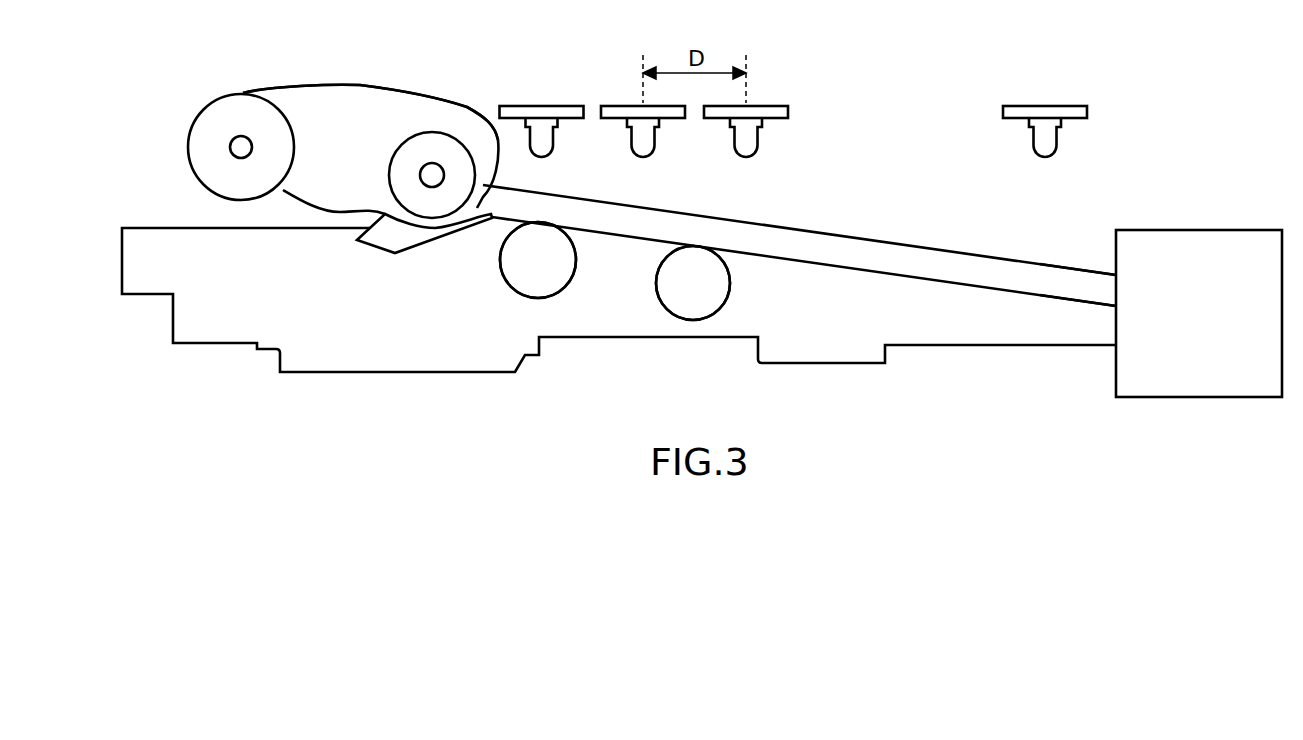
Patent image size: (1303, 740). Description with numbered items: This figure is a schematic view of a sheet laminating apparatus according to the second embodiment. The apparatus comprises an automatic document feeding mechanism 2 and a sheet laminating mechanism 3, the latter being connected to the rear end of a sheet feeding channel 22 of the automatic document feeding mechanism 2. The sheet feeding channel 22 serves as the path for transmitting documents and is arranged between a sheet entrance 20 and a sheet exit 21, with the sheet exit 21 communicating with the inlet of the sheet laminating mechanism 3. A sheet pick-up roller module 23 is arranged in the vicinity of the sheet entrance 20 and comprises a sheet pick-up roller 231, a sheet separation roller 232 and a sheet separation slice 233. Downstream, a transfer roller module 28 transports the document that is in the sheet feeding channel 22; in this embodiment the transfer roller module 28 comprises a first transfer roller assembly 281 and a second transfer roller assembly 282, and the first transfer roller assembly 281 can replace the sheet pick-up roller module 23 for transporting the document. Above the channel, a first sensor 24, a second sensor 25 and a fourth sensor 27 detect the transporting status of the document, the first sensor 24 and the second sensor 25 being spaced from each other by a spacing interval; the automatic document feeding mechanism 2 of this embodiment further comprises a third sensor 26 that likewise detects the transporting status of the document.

The automatic document feeding mechanism 2 is at (343, 382).
The sheet laminating mechanism 3 is at (1205, 243).
The sheet entrance 20 is at (198, 210).
The sheet exit 21 is at (1110, 290).
The sheet feeding channel 22 is at (850, 253).
The sheet pick-up roller module 23 is at (340, 76).
The first sensor 24 is at (748, 138).
The second sensor 25 is at (645, 138).
The third sensor 26 is at (543, 137).
The fourth sensor 27 is at (1047, 138).
The transfer roller module 28 is at (643, 308).
The sheet pick-up roller 231 is at (207, 135).
The sheet separation roller 232 is at (440, 150).
The sheet separation slice 233 is at (402, 237).
The first transfer roller assembly 281 is at (525, 270).
The second transfer roller assembly 282 is at (712, 293).